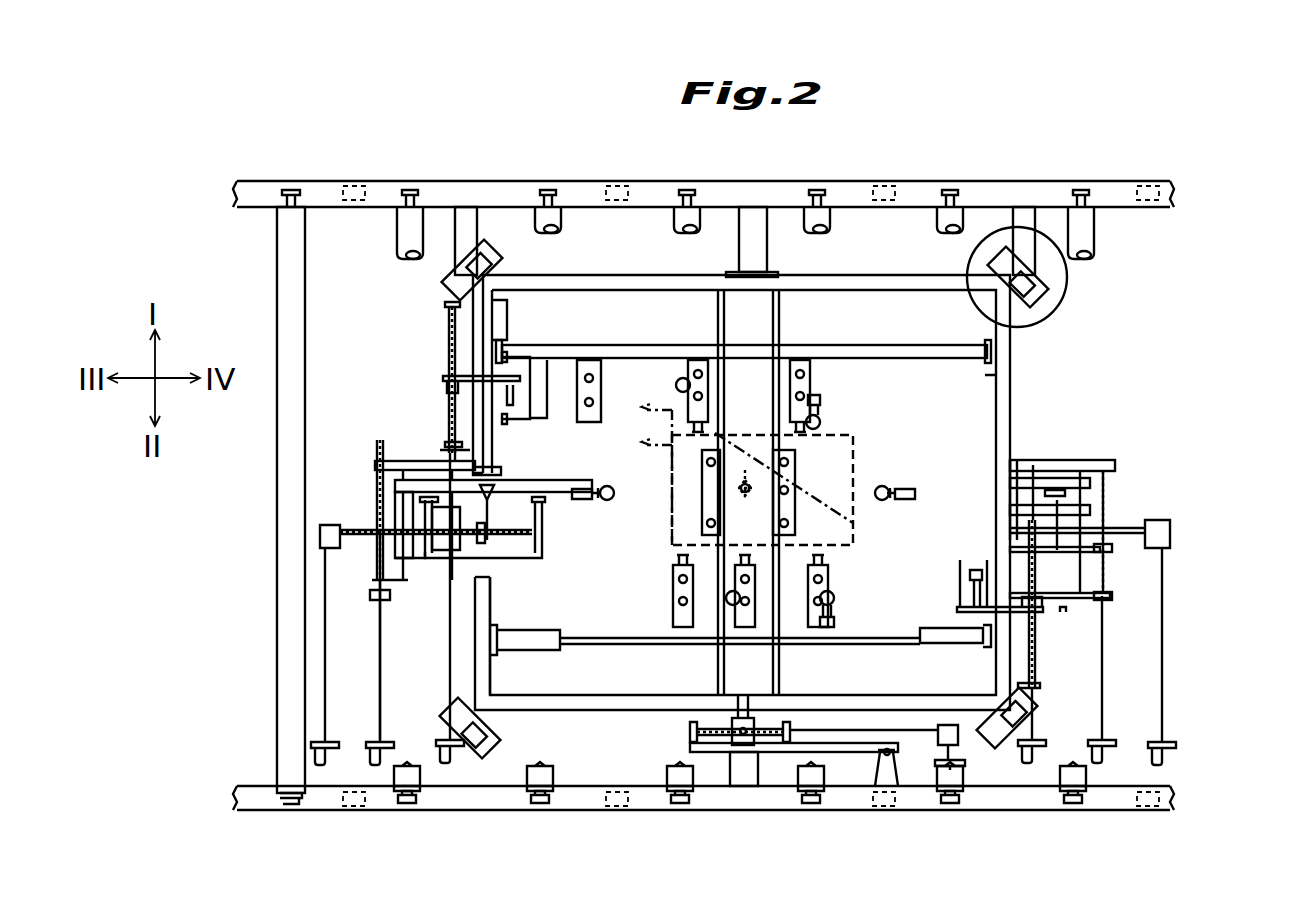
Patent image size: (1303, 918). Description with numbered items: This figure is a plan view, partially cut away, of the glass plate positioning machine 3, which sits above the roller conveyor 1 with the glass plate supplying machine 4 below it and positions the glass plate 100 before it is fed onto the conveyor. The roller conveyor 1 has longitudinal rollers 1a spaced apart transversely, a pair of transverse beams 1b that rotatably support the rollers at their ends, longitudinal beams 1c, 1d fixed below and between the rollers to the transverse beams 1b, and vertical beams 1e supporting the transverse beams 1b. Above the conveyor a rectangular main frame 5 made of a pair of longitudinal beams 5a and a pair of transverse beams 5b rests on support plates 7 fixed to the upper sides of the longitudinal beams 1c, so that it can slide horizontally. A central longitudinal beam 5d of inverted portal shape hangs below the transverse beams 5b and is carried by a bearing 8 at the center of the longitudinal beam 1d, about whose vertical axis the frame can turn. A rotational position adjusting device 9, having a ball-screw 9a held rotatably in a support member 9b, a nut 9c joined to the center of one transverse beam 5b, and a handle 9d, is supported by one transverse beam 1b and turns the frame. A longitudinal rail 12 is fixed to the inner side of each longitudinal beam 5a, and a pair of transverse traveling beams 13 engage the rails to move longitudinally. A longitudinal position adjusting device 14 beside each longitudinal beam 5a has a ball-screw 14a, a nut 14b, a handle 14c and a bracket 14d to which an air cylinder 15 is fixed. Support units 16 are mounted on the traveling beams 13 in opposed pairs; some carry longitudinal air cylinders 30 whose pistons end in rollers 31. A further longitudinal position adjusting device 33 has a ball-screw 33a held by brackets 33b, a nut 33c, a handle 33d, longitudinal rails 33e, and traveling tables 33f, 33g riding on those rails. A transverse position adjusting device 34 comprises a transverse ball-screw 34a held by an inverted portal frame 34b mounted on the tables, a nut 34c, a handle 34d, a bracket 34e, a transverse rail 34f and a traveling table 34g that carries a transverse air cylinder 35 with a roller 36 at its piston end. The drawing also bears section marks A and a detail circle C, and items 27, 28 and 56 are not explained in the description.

The roller conveyor 1 is at (265, 270).
The longitudinal rollers 1a is at (400, 233).
The transverse beams 1b is at (726, 193).
The longitudinal beams 1c is at (467, 223).
The longitudinal beam 1d is at (760, 233).
The vertical beams 1e is at (610, 185).
The glass plate positioning machine 3 is at (1021, 419).
The glass plate supplying machine 4 is at (803, 515).
The main frame 5 is at (854, 282).
The longitudinal beams 5a is at (480, 412).
The transverse beams 5b is at (662, 278).
The central longitudinal beam 5d is at (775, 318).
The support plates 7 is at (487, 253).
The bearing 8 is at (743, 475).
The rotational position adjusting device 9 is at (841, 732).
The ball-screw 9a is at (780, 743).
The support member 9b is at (845, 750).
The nut 9c is at (728, 745).
The handle 9d is at (950, 763).
The longitudinal rail 12 is at (495, 303).
The transverse traveling beams 13 is at (890, 349).
The longitudinal position adjusting device 14 is at (441, 300).
The longitudinal ball-screw 14a is at (440, 328).
The nut 14b is at (445, 388).
The handle 14c is at (470, 740).
The bracket 14d is at (455, 348).
The air cylinder 15 is at (523, 356).
The support units 16 is at (602, 408).
The hanger 27 is at (583, 373).
The frame corner 28 is at (585, 666).
The longitudinal air cylinders 30 is at (820, 398).
The roller 31 is at (690, 383).
The longitudinal position adjusting device 33 is at (377, 593).
The longitudinal ball-screw 33a is at (405, 581).
The brackets 33b is at (335, 403).
The nut 33c is at (325, 554).
The handle 33d is at (380, 743).
The longitudinal rails 33e is at (450, 605).
The traveling table 33f is at (430, 513).
The traveling table 33g is at (360, 520).
The transverse position adjusting device 34 is at (308, 577).
The transverse ball-screw 34a is at (460, 561).
The inverted portal frame 34b is at (555, 551).
The nut 34c is at (425, 501).
The handle 34d is at (325, 753).
The bracket 34e is at (395, 461).
The transverse rail 34f is at (495, 448).
The traveling table 34g is at (520, 485).
The transverse air cylinder 35 is at (577, 501).
The roller 36 is at (610, 501).
The guide plate 56 is at (705, 460).
The glass plate 100 is at (665, 546).
The section line A is at (657, 422).
The detail circle C is at (1056, 298).